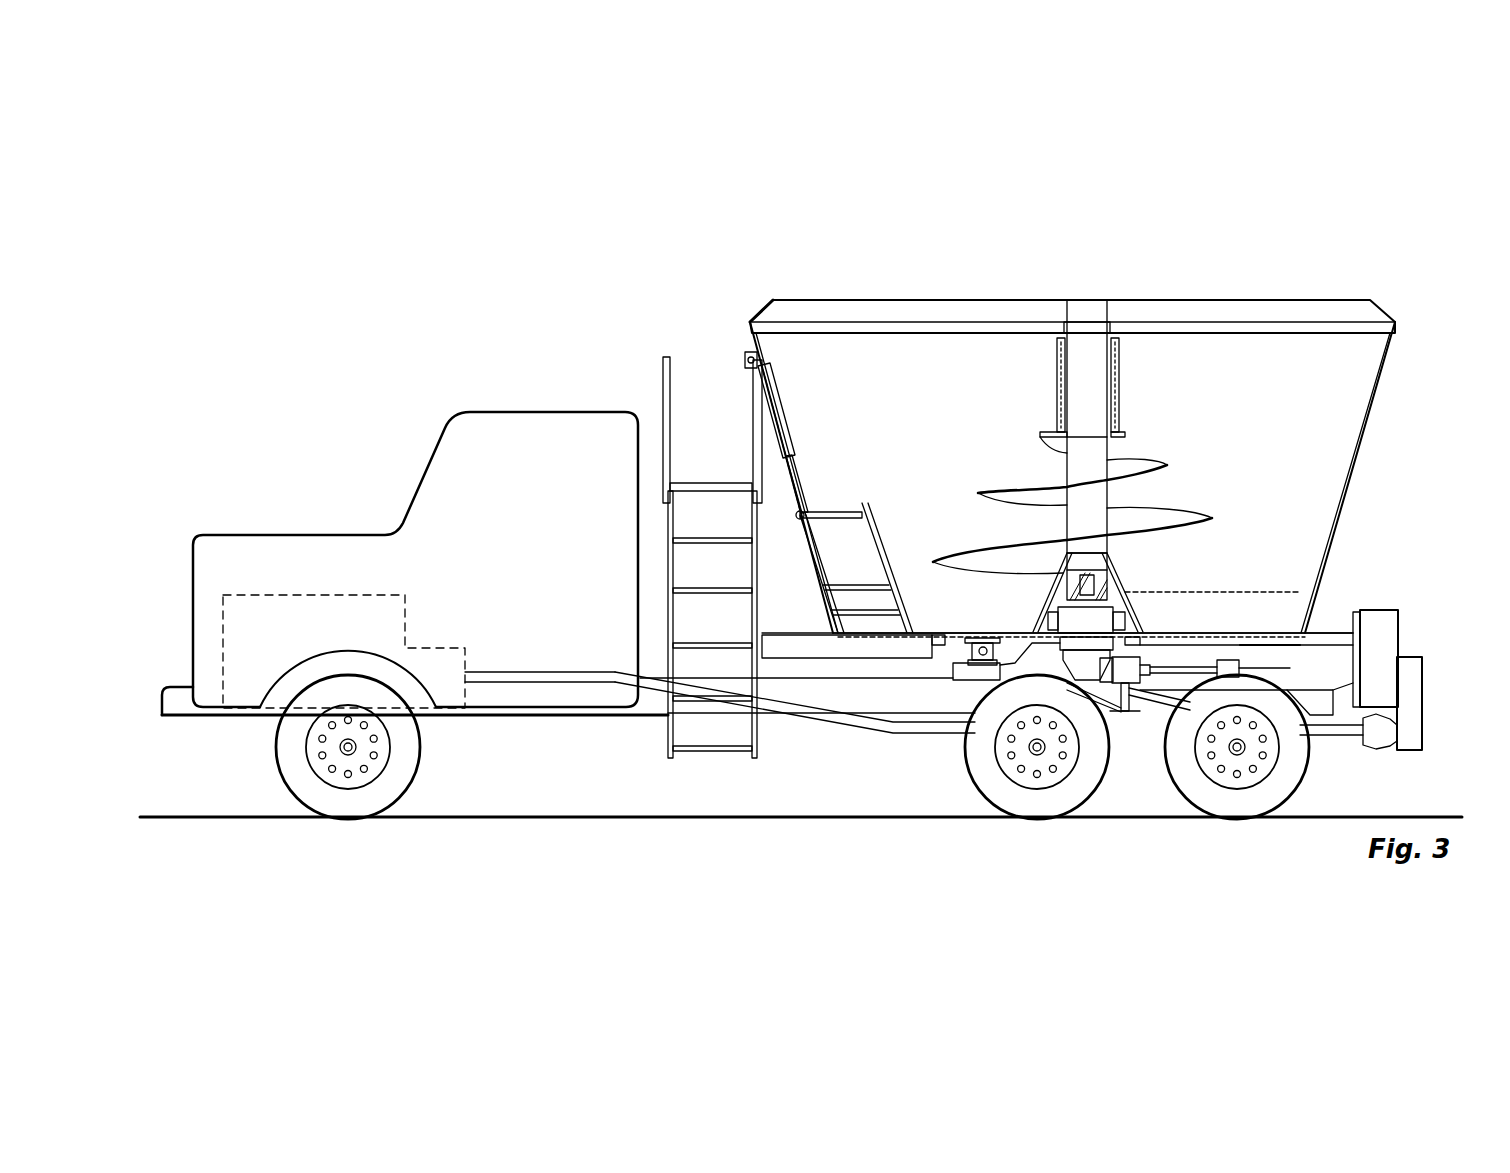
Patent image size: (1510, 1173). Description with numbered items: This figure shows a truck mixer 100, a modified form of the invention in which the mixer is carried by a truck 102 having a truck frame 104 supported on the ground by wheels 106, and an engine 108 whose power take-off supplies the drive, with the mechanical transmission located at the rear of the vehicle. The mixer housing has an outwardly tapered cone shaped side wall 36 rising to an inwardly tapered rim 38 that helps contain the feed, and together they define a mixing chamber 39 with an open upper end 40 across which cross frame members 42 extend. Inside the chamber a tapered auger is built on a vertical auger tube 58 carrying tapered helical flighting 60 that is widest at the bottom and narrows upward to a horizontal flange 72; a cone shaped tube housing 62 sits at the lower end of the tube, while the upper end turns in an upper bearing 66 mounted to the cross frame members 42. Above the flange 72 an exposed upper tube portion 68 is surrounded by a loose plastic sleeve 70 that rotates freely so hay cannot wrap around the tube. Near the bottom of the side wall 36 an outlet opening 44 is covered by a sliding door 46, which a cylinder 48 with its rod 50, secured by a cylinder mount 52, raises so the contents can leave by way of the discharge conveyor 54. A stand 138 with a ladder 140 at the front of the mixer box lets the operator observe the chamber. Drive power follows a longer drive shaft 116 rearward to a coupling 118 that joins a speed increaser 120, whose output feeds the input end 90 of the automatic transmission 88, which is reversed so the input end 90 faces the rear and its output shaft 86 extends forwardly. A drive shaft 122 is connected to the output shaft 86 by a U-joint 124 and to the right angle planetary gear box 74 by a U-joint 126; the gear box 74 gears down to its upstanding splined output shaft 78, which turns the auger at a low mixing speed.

The side wall 36 is at (1340, 400).
The rim 38 is at (760, 305).
The mixing chamber 39 is at (890, 345).
The open upper end 40 is at (1270, 298).
The cross frame members 42 is at (1208, 328).
The outlet opening 44 is at (886, 560).
The sliding door 46 is at (812, 572).
The cylinder 48 is at (772, 430).
The rod 50 is at (808, 472).
The cylinder mount 52 is at (750, 356).
The discharge conveyor 54 is at (826, 515).
The auger tube 58 is at (1077, 468).
The helical flighting 60 is at (975, 548).
The tube housing 62 is at (1045, 612).
The upper bearing 66 is at (1075, 330).
The exposed upper tube portion 68 is at (1100, 380).
The sleeve 70 is at (1060, 385).
The horizontal flange 72 is at (1055, 432).
The right angle planetary gear box 74 is at (1100, 668).
The splined output shaft 78 is at (1092, 598).
The output shaft 86 is at (1322, 635).
The automatic transmission 88 is at (1376, 612).
The input end 90 is at (1402, 640).
The truck mixer 100 is at (456, 412).
The truck 102 is at (362, 531).
The truck frame 104 is at (845, 696).
The wheels 106 is at (405, 745).
The engine 108 is at (318, 596).
The drive shaft 116 is at (550, 673).
The coupling 118 is at (1385, 748).
The speed increaser 120 is at (1418, 718).
The drive shaft 122 is at (1240, 670).
The U-joint 124 is at (1248, 642).
The U-joint 126 is at (1140, 642).
The stand 138 is at (686, 484).
The ladder 140 is at (672, 535).